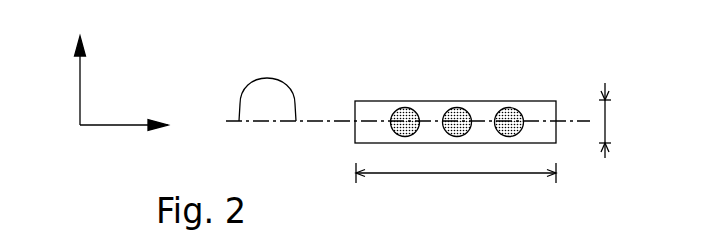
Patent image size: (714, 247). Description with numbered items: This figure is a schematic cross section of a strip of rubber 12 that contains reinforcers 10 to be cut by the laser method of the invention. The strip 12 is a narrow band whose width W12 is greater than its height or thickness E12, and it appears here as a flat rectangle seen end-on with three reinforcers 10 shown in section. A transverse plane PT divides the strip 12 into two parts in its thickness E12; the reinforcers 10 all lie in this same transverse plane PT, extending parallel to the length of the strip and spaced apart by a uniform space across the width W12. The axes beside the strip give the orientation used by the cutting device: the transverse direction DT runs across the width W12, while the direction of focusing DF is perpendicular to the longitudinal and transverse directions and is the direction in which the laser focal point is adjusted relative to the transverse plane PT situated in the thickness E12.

The reinforcers 10 is at (410, 101).
The strip of rubber 12 is at (375, 100).
The width of the strip W12 is at (456, 185).
The thickness of the strip E12 is at (629, 120).
The transverse plane PT is at (267, 99).
The direction of focusing DF is at (61, 80).
The transverse direction DT is at (124, 141).